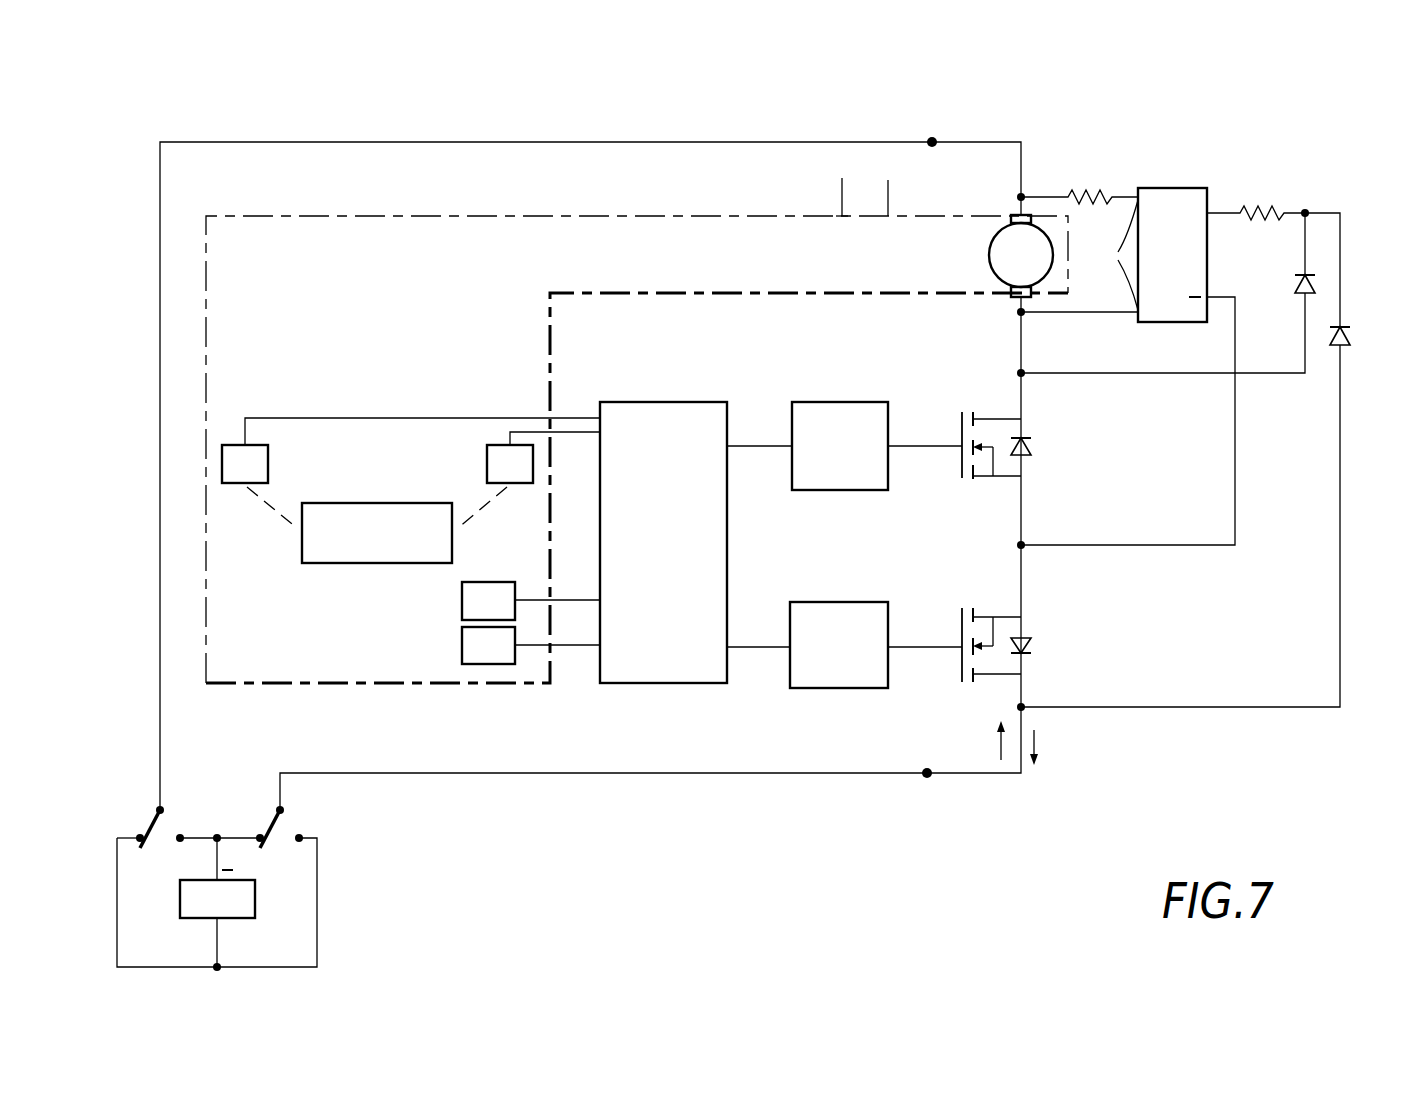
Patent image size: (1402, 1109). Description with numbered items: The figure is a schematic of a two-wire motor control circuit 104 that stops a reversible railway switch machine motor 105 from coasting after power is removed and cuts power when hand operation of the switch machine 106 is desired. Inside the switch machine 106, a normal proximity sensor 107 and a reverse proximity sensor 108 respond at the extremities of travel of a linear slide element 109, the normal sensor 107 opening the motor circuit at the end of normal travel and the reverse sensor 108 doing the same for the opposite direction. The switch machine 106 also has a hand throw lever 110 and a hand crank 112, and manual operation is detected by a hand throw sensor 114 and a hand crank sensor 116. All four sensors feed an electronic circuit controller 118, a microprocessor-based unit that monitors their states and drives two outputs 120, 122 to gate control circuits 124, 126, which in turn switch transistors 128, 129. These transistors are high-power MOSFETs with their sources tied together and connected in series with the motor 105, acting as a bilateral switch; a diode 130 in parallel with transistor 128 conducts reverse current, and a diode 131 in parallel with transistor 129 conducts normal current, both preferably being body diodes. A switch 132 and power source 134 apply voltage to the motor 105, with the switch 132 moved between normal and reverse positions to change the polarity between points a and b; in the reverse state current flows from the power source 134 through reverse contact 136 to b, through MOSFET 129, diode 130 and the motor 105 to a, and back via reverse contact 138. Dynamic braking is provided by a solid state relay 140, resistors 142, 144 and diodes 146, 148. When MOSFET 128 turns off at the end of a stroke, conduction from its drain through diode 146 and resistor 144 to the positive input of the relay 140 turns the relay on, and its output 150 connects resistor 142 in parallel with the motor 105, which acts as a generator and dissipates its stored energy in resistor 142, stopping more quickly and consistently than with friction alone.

The two-wire motor control circuit 104 is at (643, 889).
The reversible railway switch machine motor 105 is at (990, 260).
The switch machine 106 is at (346, 215).
The normal proximity sensor 107 is at (268, 452).
The reverse proximity sensor 108 is at (487, 473).
The linear slide element 109 is at (325, 565).
The hand throw lever 110 is at (842, 198).
The hand crank 112 is at (888, 198).
The hand throw sensor 114 is at (462, 603).
The hand crank sensor 116 is at (462, 647).
The electronic circuit controller 118 is at (688, 402).
The first output 120 is at (727, 448).
The second output 122 is at (727, 650).
The first gate control circuit 124 is at (864, 402).
The second gate control circuit 126 is at (864, 602).
The first transistor 128 is at (958, 482).
The second transistor 129 is at (958, 682).
The first diode 130 is at (1031, 449).
The second diode 131 is at (1031, 648).
The switch 132 is at (138, 780).
The power source 134 is at (188, 918).
The reverse contact 136 is at (305, 837).
The reverse contact 138 is at (186, 836).
The solid state relay 140 is at (1170, 188).
The resistor 142 is at (1092, 190).
The resistor 144 is at (1256, 208).
The diode 146 is at (1296, 284).
The diode 148 is at (1352, 338).
The output of the solid state relay 150 is at (1112, 255).